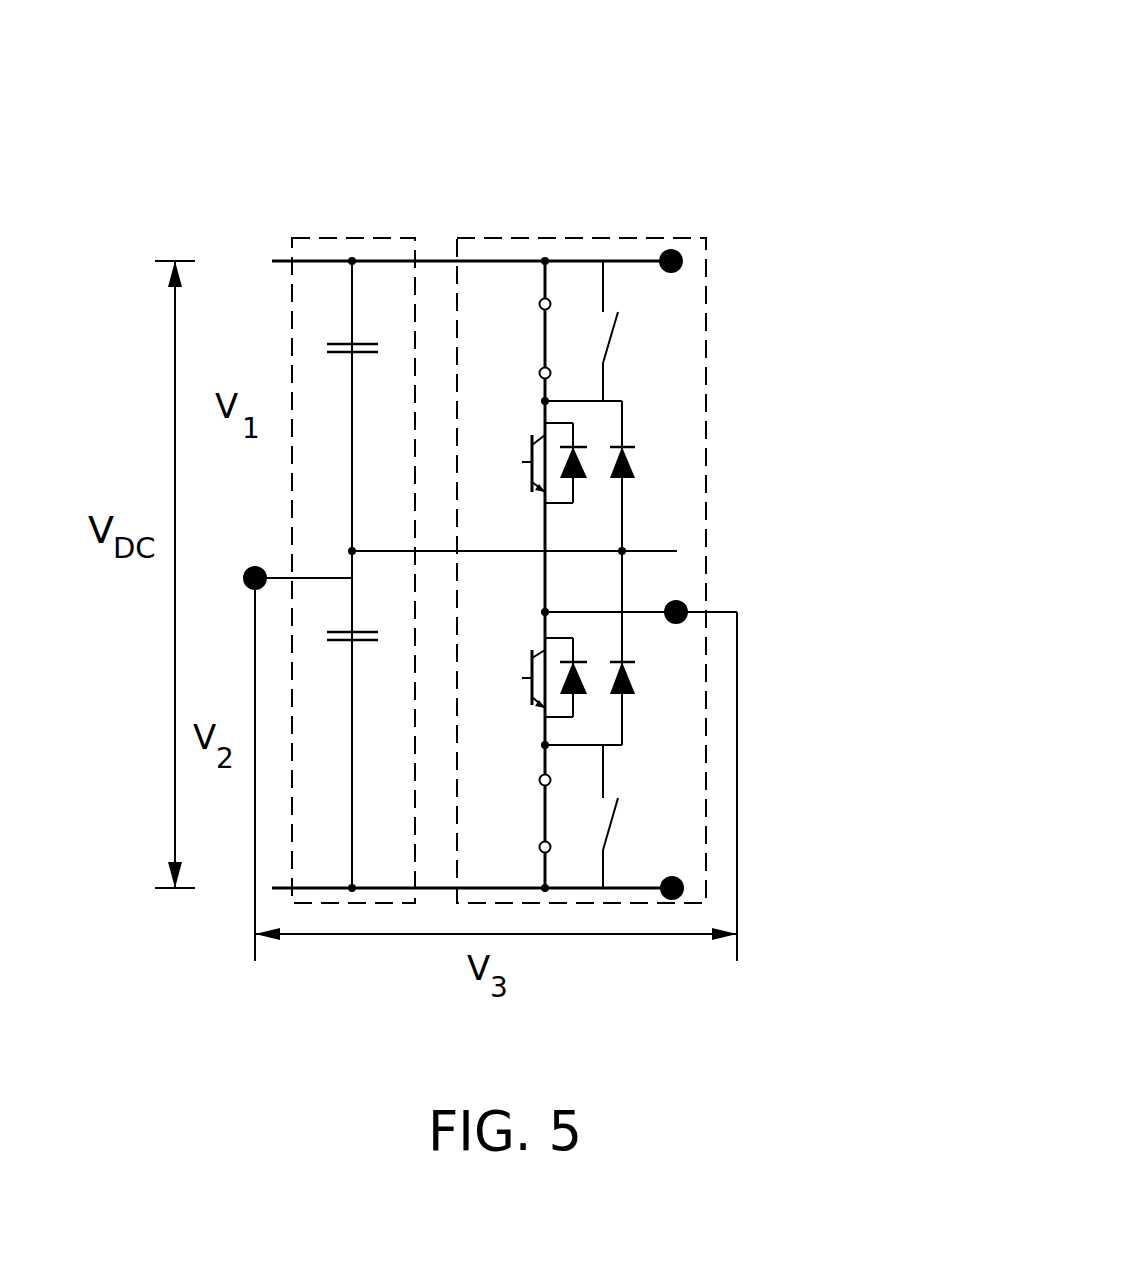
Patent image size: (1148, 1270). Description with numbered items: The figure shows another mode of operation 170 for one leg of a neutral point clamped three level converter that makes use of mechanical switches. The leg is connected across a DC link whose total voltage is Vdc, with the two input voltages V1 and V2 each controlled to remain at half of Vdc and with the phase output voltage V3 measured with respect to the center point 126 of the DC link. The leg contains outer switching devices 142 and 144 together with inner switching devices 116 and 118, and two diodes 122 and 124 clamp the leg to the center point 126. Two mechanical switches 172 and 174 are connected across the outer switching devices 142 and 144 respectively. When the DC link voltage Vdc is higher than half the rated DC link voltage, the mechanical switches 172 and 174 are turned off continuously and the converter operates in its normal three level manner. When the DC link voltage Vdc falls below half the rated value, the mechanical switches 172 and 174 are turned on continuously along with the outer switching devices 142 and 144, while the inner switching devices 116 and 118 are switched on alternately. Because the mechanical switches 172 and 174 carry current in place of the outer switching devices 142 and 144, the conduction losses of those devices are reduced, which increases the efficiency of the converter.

The mode of operation 170 is at (726, 77).
The outer switching device 142 is at (545, 340).
The outer switching device 144 is at (545, 813).
The mechanical switch 172 is at (615, 338).
The mechanical switch 174 is at (613, 827).
The inner switching device 116 is at (573, 423).
The inner switching device 118 is at (573, 717).
The diode 122 is at (632, 460).
The diode 124 is at (633, 677).
The center point 126 is at (253, 566).